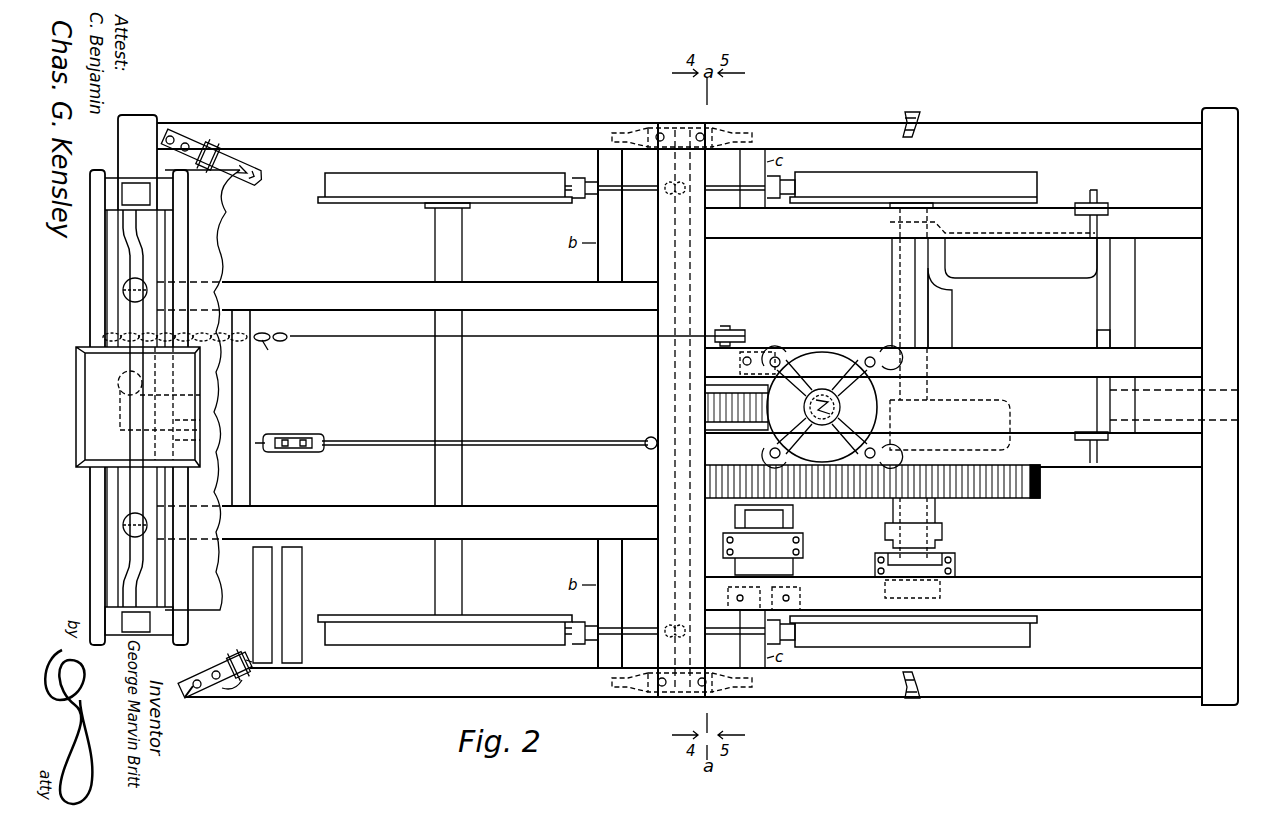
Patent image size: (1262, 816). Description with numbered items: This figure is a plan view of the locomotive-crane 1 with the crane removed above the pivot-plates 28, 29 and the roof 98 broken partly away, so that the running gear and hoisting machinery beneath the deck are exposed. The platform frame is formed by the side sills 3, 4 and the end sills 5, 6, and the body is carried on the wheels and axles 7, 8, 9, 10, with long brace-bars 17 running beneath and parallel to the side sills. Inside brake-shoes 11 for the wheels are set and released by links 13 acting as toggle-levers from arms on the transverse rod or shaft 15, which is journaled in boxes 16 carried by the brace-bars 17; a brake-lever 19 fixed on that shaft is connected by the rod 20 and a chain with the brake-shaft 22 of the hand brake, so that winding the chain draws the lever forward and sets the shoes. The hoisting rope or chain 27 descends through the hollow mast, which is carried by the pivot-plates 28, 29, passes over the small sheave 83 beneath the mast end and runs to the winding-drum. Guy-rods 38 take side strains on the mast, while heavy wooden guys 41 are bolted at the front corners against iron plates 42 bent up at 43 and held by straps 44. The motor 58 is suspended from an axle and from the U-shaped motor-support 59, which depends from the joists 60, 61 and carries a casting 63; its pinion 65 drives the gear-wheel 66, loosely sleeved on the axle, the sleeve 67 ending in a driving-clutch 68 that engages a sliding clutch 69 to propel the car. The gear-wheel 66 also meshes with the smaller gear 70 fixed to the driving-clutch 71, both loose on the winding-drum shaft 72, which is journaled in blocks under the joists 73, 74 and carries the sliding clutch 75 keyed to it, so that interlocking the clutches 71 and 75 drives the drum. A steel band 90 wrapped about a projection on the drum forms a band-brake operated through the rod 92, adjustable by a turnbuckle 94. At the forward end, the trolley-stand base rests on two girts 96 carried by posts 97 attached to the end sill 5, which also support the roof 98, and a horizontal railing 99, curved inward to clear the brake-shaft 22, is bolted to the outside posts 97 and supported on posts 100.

The frame 1 is at (504, 124).
The side sill 3 is at (420, 695).
The side sill 4 is at (451, 124).
The end sill 5 is at (158, 126).
The end sill 6 is at (1200, 700).
The wheel and axle 7 is at (418, 188).
The wheel and axle 8 is at (452, 498).
The wheel and axle 9 is at (1030, 180).
The wheel and axle 10 is at (928, 426).
The inside brake-shoe 11 is at (580, 204).
The link 13 is at (644, 636).
The rod or shaft 15 is at (643, 176).
The box 16 is at (702, 132).
The brace-bar 17 is at (735, 130).
The brake-lever 19 is at (744, 320).
The rod 20 is at (356, 338).
The brake-shaft 22 is at (105, 338).
The hoisting rope or chain 27 is at (826, 386).
The pivot-plate 28 is at (876, 394).
The pivot-plate 29 is at (867, 352).
The guy-rod 38 is at (920, 114).
The wooden guy 41 is at (268, 172).
The iron plate 42 is at (228, 694).
The bent-up portion 43 is at (248, 679).
The strap 44 is at (212, 172).
The motor 58 is at (965, 324).
The motor-support 59 is at (1095, 305).
The joist 60 is at (1155, 467).
The joist 61 is at (1183, 230).
The casting 63 is at (1110, 342).
The pinion 65 is at (1048, 482).
The gear-wheel 66 is at (990, 498).
The sleeve 67 is at (944, 506).
The driving-clutch 68 is at (944, 540).
The sliding clutch 69 is at (952, 556).
The gear 70 is at (835, 498).
The driving-clutch 71 is at (803, 516).
The winding-drum shaft 72 is at (760, 350).
The joist 73 is at (971, 384).
The joist 74 is at (672, 200).
The sliding clutch 75 is at (84, 462).
The sheave 83 is at (838, 406).
The band 90 is at (706, 282).
The rod 92 is at (382, 438).
The turnbuckle 94 is at (296, 432).
The girt 96 is at (90, 512).
The post or standard 97 is at (108, 182).
The roof 98 is at (202, 390).
The horizontal railing 99 is at (130, 235).
The post 100 is at (146, 268).